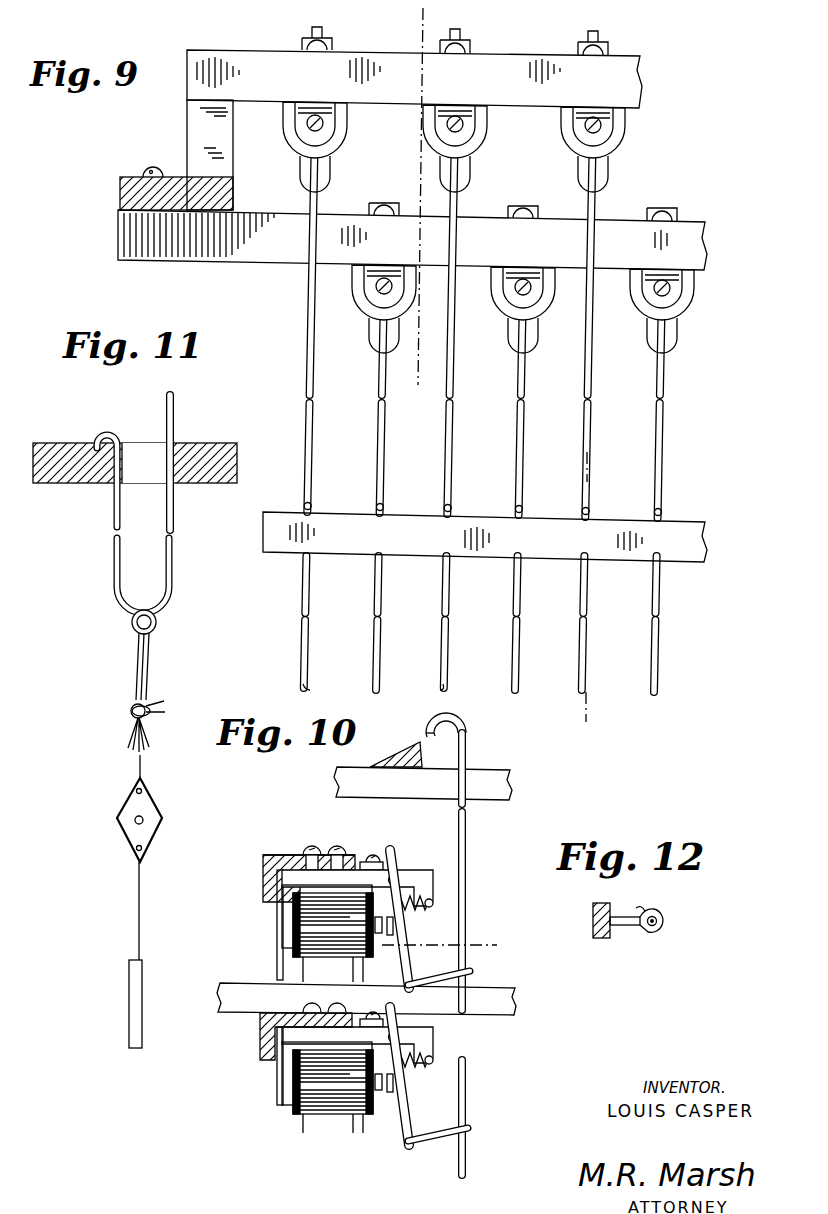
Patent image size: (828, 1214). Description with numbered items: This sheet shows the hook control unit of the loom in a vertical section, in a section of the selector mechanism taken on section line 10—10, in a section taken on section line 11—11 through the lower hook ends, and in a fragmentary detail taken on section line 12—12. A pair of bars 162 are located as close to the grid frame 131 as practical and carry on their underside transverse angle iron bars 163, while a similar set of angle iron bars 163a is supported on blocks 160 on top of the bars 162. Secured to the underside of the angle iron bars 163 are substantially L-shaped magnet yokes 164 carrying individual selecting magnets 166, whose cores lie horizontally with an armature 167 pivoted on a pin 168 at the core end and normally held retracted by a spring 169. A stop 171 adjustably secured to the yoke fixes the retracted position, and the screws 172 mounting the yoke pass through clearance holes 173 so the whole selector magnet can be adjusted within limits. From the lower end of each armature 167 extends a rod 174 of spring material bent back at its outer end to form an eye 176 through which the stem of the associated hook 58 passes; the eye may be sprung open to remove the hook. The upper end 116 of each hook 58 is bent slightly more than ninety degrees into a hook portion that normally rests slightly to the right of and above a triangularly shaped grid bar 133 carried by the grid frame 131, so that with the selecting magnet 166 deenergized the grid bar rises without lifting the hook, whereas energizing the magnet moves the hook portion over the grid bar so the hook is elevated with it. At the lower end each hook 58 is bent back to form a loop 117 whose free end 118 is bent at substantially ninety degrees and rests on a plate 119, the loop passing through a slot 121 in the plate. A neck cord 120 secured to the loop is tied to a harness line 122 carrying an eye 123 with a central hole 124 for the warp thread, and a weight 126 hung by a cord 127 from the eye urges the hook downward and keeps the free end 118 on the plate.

In FIG. 9, the section line 10— 10 is at (394, 23).
In FIG. 9, the section line 11— 11 is at (566, 467).
In FIG. 10, the section line 12— 12 is at (390, 938).
In FIG. 9, the hook 58 is at (511, 408).
In FIG. 11, the hook 58 is at (181, 421).
In FIG. 10, the hook 58 is at (478, 806).
In FIG. 12, the hook 58 is at (658, 930).
In FIG. 10, the upper end of hook 116 is at (466, 730).
In FIG. 9, the loop 117 is at (444, 688).
In FIG. 11, the loop 117 is at (165, 607).
In FIG. 9, the free end of loop section 118 is at (447, 500).
In FIG. 11, the free end of loop section 118 is at (108, 437).
In FIG. 9, the plate 119 is at (686, 532).
In FIG. 11, the plate 119 is at (50, 441).
In FIG. 11, the neck cord 120 is at (151, 666).
In FIG. 11, the slot 121 is at (137, 462).
In FIG. 11, the harness line 122 is at (142, 764).
In FIG. 11, the eye 123 is at (131, 803).
In FIG. 11, the central hole 124 is at (133, 823).
In FIG. 11, the weight 126 is at (130, 1010).
In FIG. 11, the cord 127 is at (136, 925).
In FIG. 10, the grid frame 131 is at (497, 781).
In FIG. 10, the grid bar 133 is at (397, 754).
In FIG. 9, the block 160 is at (197, 119).
In FIG. 10, the block 160 is at (280, 967).
In FIG. 9, the bar 162 is at (138, 192).
In FIG. 10, the bar 162 is at (512, 1008).
In FIG. 9, the angle iron bar 163 is at (165, 252).
In FIG. 10, the angle iron bar 163 is at (262, 1038).
In FIG. 9, the angle iron bar 163a is at (633, 87).
In FIG. 10, the angle iron bar 163a is at (263, 882).
In FIG. 9, the magnet yoke 164 is at (328, 132).
In FIG. 10, the magnet yoke 164 is at (283, 936).
In FIG. 9, the selecting magnet 166 is at (339, 119).
In FIG. 10, the selecting magnet 166 is at (313, 921).
In FIG. 9, the armature 167 is at (331, 170).
In FIG. 10, the armature 167 is at (401, 937).
In FIG. 12, the armature 167 is at (594, 921).
In FIG. 10, the pin 168 is at (397, 878).
In FIG. 10, the spring 169 is at (437, 909).
In FIG. 10, the stop 171 is at (373, 856).
In FIG. 10, the screw 172 is at (337, 846).
In FIG. 10, the clearance hole 173 is at (293, 856).
In FIG. 10, the rod 174 is at (430, 1160).
In FIG. 12, the rod 174 is at (629, 926).
In FIG. 12, the eye 176 is at (664, 918).